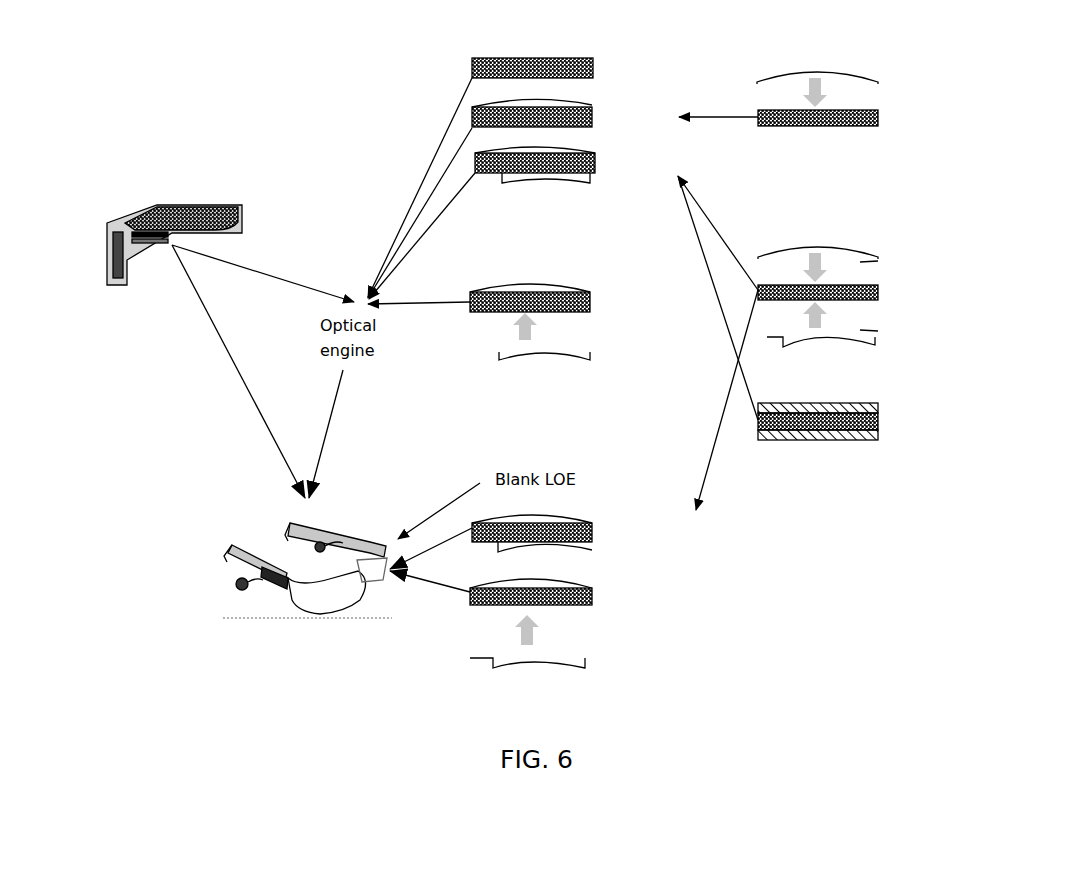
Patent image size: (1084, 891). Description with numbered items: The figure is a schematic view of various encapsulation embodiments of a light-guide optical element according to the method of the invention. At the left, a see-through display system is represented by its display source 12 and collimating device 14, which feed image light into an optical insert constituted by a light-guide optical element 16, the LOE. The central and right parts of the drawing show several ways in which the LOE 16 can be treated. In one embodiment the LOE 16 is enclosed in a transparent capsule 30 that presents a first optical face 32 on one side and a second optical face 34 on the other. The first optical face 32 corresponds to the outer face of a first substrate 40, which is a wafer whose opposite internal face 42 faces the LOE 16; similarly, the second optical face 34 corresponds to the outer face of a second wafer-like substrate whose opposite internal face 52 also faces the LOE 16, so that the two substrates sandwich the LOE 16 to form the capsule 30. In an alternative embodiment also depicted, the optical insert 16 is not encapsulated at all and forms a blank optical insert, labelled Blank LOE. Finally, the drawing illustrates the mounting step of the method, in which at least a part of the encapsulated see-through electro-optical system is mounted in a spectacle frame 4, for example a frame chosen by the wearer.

The spectacle frame 4 is at (287, 596).
The display source 12 is at (106, 243).
The collimating device 14 is at (104, 258).
The light-guide optical element 16 is at (575, 67).
The transparent capsule 30 is at (574, 54).
The first optical face 32 is at (573, 104).
The second optical face 34 is at (585, 180).
The first substrate 40 is at (834, 236).
The internal face 42 is at (860, 263).
The internal face 52 is at (860, 330).